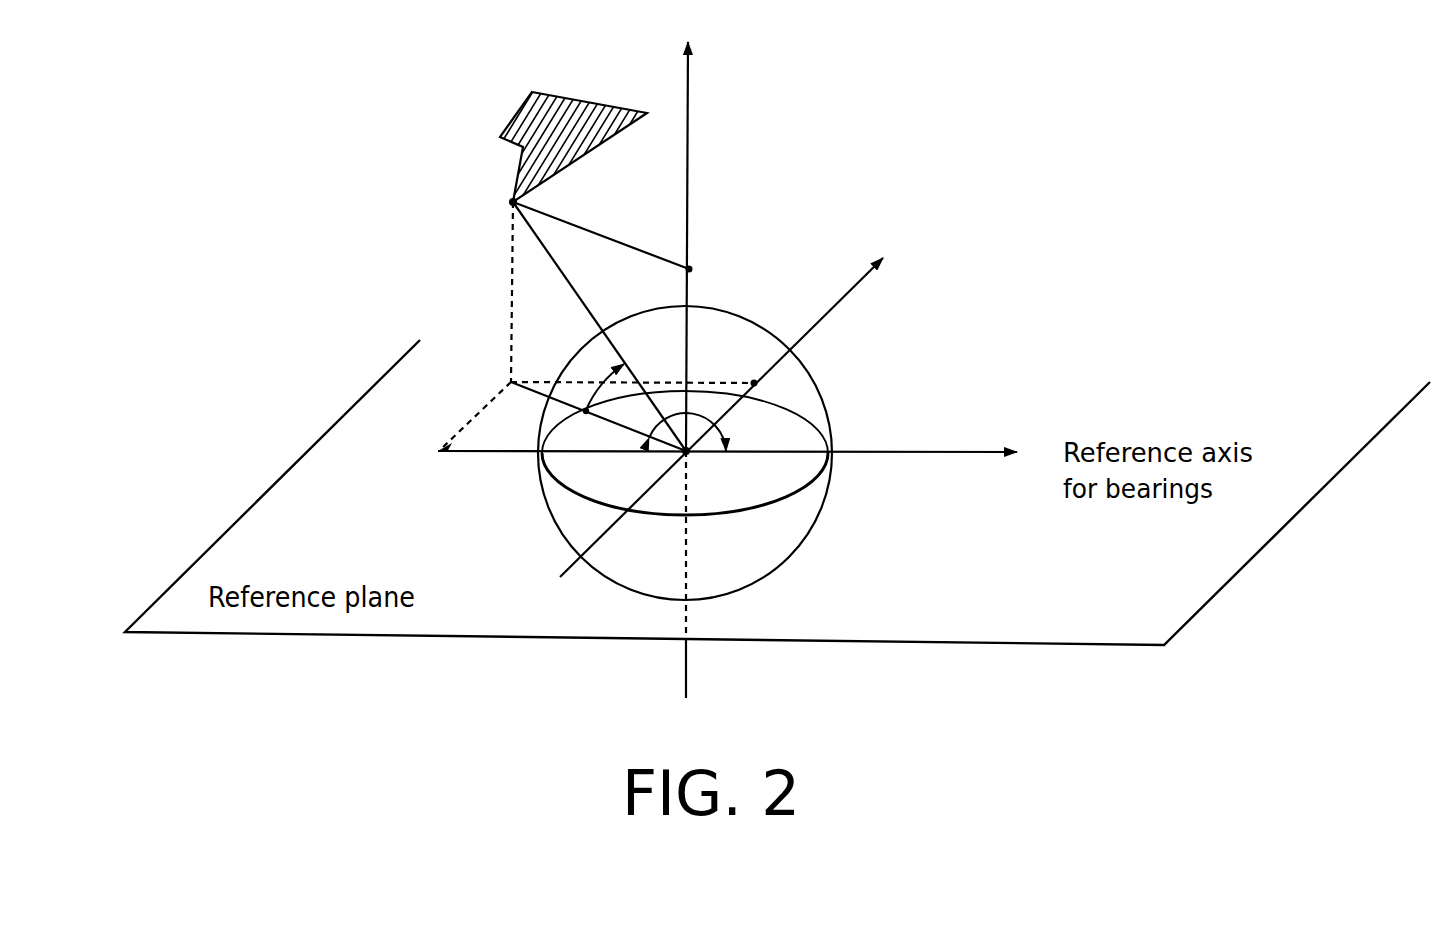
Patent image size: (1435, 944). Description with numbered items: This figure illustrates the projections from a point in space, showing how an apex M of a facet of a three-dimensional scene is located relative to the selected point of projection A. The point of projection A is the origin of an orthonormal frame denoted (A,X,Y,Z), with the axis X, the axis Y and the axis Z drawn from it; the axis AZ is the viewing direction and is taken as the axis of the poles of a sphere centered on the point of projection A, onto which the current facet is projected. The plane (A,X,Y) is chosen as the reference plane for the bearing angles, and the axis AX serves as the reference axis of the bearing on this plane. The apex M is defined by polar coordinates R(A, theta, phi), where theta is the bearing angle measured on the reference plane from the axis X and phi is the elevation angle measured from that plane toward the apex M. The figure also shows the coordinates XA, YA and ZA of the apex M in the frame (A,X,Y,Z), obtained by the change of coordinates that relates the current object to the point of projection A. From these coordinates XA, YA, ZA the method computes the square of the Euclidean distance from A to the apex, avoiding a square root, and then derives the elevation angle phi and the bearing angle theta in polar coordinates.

The apex M is at (564, 268).
The point of projection A is at (666, 468).
The X axis X is at (739, 458).
The Y axis Y is at (733, 410).
The Z axis Z is at (702, 361).
The X coordinate of the apex XA is at (467, 439).
The Y coordinate of the apex YA is at (634, 364).
The Z coordinate of the apex ZA is at (709, 263).
The elevation angle phi is at (603, 378).
The bearing angle theta is at (699, 432).